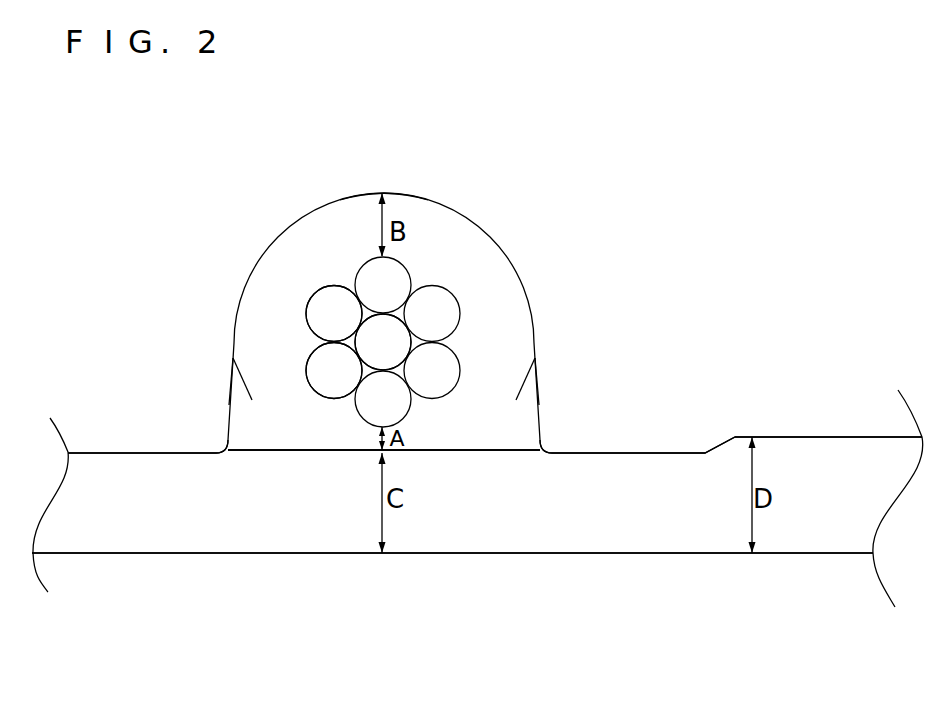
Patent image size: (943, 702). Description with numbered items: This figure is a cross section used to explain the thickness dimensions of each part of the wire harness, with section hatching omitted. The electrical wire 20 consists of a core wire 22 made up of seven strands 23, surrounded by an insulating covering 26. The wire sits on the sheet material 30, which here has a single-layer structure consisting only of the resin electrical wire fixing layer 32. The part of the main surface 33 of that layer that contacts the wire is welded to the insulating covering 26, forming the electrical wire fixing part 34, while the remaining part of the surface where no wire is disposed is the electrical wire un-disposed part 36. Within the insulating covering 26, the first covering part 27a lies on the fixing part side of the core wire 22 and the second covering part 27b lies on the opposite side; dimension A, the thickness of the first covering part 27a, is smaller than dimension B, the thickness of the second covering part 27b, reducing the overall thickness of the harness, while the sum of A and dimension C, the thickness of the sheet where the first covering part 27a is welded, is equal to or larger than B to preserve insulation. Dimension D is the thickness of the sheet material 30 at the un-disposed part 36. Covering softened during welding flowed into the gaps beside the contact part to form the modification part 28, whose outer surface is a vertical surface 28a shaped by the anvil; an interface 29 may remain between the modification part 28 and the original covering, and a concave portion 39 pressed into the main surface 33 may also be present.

The electrical wire 20 is at (274, 332).
The core wire 22 is at (272, 337).
The strand 23 is at (323, 316).
The insulating covering 26 is at (272, 277).
The first covering part 27a is at (365, 440).
The second covering part 27b is at (365, 212).
The modification part 28 is at (229, 392).
The vertical surface 28a is at (227, 431).
The interface 29 is at (229, 375).
The sheet material 30 is at (639, 558).
The electrical wire fixing layer 32 is at (530, 544).
The main surface 33 is at (118, 451).
The electrical wire fixing part 34 is at (347, 470).
The electrical wire un-disposed part 36 is at (817, 452).
The concave portion 39 is at (642, 452).